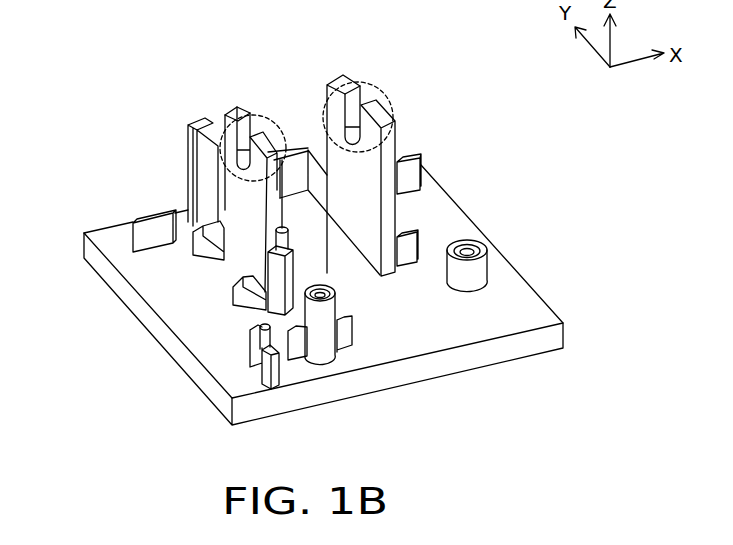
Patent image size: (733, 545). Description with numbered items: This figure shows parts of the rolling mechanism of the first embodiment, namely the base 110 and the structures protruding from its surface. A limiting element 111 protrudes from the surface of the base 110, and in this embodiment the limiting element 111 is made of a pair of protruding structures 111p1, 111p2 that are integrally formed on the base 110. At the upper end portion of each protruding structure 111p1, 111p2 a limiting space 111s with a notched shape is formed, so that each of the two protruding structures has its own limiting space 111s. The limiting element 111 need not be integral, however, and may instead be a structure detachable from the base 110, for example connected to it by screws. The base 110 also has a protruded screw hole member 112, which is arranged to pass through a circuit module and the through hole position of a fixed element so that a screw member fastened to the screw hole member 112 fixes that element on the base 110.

The base 110 is at (120, 113).
The limiting element 111 is at (439, 169).
The protruding structure 111p1 is at (358, 198).
The protruding structure 111p2 is at (272, 215).
The limiting space 111s is at (323, 113).
The screw hole member 112 is at (322, 335).